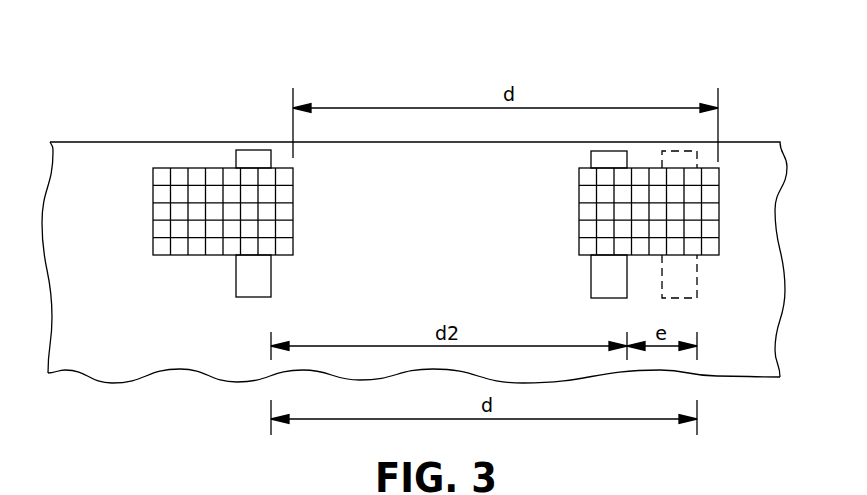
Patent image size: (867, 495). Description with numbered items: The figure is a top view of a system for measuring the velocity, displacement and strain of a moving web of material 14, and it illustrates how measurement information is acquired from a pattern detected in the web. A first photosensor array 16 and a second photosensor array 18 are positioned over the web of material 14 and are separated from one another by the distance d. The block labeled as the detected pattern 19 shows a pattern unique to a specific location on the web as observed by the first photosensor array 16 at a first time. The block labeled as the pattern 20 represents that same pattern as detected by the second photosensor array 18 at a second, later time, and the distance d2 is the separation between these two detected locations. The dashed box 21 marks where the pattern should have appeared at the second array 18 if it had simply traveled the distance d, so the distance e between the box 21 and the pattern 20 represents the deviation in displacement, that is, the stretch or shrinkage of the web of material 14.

The web of material 14 is at (130, 142).
The first photosensor array 16 is at (293, 205).
The second photosensor array 18 is at (579, 207).
The detected pattern 19 is at (271, 275).
The pattern as detected by second photosensor array 20 is at (591, 275).
The expected pattern location 21 is at (697, 264).